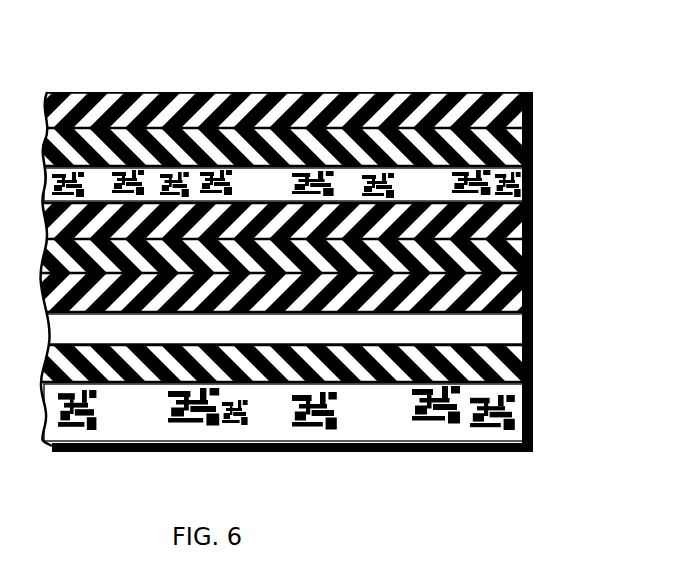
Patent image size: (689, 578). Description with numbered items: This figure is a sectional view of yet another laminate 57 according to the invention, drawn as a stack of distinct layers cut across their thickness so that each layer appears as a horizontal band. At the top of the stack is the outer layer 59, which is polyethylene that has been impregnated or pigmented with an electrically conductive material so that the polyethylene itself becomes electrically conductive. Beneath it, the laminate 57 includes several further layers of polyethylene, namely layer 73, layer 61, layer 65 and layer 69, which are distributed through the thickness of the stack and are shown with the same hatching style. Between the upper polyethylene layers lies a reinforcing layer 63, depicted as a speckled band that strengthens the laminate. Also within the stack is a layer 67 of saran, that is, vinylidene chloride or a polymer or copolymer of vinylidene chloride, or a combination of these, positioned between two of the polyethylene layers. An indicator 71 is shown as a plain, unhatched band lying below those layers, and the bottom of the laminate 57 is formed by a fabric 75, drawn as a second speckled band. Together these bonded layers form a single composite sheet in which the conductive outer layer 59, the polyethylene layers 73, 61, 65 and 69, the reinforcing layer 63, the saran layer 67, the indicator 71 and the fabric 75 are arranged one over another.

The laminate 57 is at (178, 83).
The outer layer 59 is at (512, 100).
The layer of polyethylene 73 is at (530, 137).
The reinforcing layer 63 is at (530, 188).
The layer of polyethylene 61 is at (523, 222).
The layer of saran 67 is at (527, 257).
The layer of polyethylene 65 is at (533, 303).
The indicator 71 is at (512, 333).
The layer of polyethylene 69 is at (530, 373).
The fabric 75 is at (523, 420).